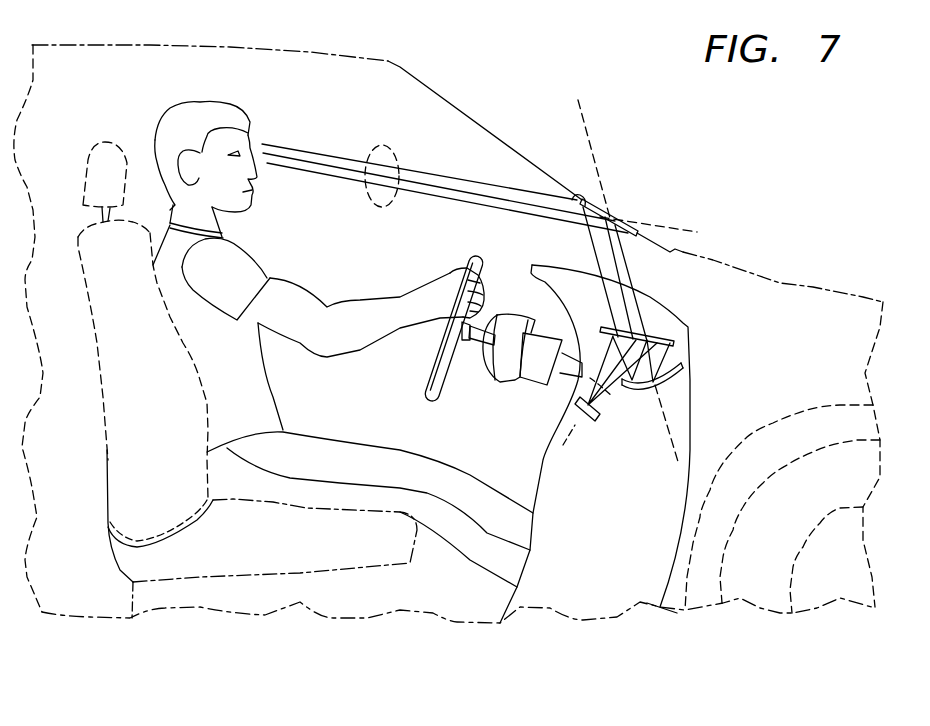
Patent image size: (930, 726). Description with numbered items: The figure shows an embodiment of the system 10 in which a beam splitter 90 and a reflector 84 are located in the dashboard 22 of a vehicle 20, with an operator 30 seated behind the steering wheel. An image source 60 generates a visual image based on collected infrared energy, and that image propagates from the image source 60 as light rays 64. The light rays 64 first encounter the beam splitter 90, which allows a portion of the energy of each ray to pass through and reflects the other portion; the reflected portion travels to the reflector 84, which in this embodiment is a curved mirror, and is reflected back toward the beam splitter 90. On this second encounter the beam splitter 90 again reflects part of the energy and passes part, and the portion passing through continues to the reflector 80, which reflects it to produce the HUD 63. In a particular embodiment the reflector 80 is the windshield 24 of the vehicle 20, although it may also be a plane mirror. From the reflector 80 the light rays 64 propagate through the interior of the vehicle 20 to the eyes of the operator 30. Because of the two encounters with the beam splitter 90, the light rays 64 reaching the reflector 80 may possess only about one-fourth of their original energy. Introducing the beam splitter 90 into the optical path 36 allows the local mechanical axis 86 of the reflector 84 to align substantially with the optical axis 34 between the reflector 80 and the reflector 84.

The system 10 is at (724, 141).
The vehicle 20 is at (808, 283).
The dashboard 22 is at (543, 466).
The windshield 24 is at (481, 125).
The operator 30 is at (155, 137).
The optical axis 34 is at (672, 224).
The optical path 36 is at (378, 208).
The image source 60 is at (600, 418).
The HUD 63 is at (576, 197).
The light rays 64 is at (603, 390).
The reflector 80 is at (620, 226).
The reflector 84 is at (680, 392).
The local mechanical axis 86 is at (598, 130).
The beam splitter 90 is at (664, 337).